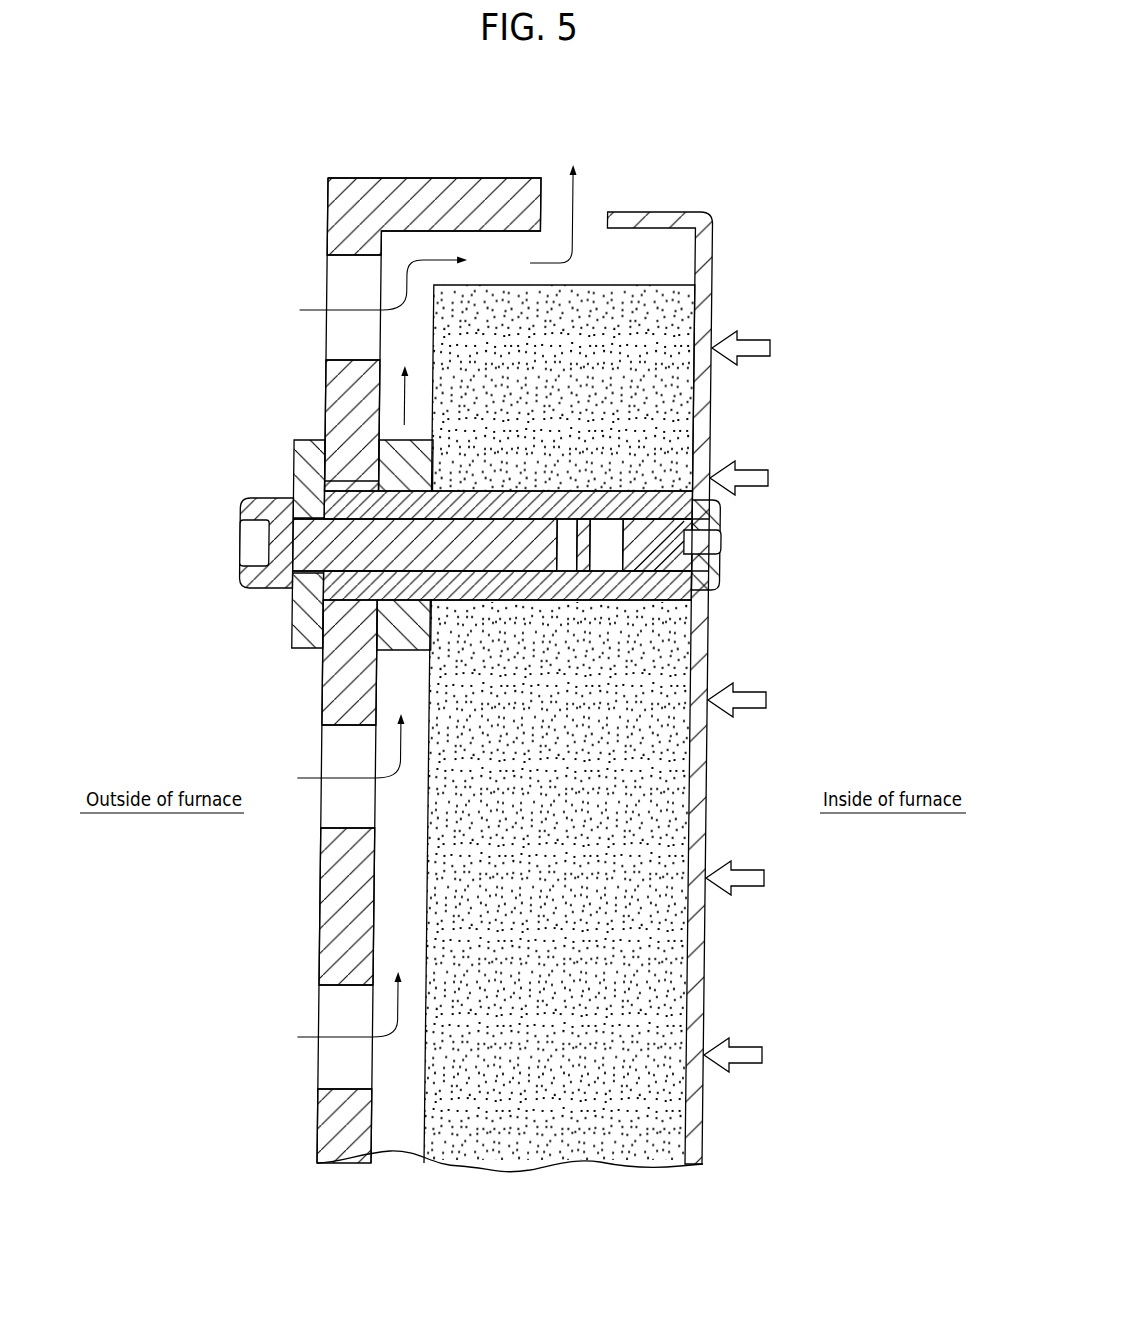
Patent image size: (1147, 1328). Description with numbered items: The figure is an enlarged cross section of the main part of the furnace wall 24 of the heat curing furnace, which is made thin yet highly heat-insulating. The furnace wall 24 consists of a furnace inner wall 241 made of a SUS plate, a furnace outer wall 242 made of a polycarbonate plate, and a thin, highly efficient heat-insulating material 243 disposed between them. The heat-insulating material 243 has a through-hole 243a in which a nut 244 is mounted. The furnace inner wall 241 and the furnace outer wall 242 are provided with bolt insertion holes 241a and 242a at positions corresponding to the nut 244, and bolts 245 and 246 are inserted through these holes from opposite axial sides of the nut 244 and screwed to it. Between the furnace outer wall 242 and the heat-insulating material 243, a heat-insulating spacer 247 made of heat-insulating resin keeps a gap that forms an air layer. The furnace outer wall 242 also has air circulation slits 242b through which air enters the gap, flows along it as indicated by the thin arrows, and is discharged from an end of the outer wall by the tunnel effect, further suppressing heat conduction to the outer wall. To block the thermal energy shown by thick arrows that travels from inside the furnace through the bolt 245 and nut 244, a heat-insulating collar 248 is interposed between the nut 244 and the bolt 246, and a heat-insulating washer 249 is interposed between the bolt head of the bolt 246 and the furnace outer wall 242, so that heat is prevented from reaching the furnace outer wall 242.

The furnace wall 24 is at (739, 167).
The furnace inner wall 241 is at (712, 805).
The bolt insertion hole 241a is at (716, 576).
The furnace outer wall 242 is at (335, 915).
The bolt insertion hole 242a is at (295, 598).
The air circulation slits 242b is at (356, 256).
The heat-insulating material 243 is at (652, 985).
The through-hole 243a is at (690, 490).
The nut 244 is at (612, 605).
The bolt 245 is at (720, 543).
The bolt 246 is at (248, 548).
The heat-insulating spacer 247 is at (388, 631).
The heat-insulating collar 248 is at (350, 462).
The heat-insulating washer 249 is at (293, 453).